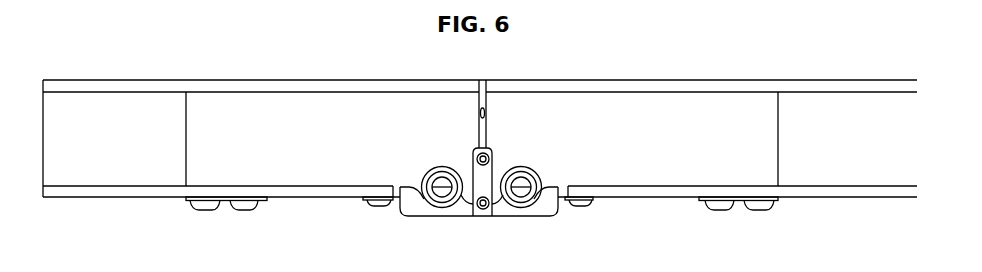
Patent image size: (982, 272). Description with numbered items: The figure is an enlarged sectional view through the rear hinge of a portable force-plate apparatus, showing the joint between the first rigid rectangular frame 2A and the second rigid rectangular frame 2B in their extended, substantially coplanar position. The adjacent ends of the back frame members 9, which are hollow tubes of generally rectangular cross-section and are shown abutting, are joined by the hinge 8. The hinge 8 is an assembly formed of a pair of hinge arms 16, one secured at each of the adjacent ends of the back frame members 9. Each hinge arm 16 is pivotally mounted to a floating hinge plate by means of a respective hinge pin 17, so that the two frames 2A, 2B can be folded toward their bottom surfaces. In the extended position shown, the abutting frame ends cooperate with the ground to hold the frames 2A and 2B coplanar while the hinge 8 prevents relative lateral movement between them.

The back frame member 9 is at (260, 87).
The first rigid rectangular frame 2A is at (124, 160).
The second rigid rectangular frame 2B is at (837, 166).
The hinge arm 16 is at (331, 157).
The hinge pin 17 is at (443, 197).
The hinge 8 is at (523, 208).